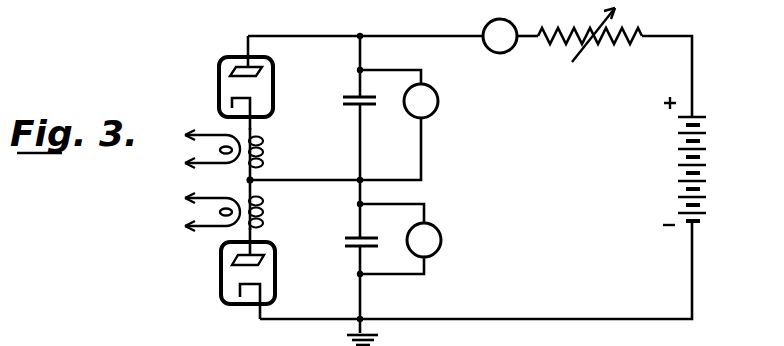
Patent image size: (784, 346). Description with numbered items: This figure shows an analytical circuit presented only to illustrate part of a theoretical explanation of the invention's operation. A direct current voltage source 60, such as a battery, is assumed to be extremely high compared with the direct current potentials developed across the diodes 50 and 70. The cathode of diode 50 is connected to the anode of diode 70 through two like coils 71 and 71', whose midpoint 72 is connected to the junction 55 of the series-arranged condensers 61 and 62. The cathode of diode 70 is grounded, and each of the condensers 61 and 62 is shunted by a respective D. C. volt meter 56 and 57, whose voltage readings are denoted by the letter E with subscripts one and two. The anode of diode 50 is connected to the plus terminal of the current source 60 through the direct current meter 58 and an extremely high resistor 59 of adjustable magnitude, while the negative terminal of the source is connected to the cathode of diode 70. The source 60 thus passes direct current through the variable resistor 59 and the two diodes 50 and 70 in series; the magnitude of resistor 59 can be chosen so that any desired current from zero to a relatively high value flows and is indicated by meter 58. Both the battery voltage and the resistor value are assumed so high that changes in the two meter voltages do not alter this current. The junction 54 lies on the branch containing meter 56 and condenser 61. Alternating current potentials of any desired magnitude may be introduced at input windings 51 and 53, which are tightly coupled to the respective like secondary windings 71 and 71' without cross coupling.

The diode 50 is at (219, 66).
The input winding 51 is at (232, 134).
The input winding 53 is at (214, 227).
The junction point 54 is at (362, 69).
The junction 55 is at (362, 178).
The D. C. volt meter 56 is at (438, 101).
The D. C. volt meter 57 is at (441, 238).
The direct current meter 58 is at (487, 24).
The variable resistor 59 is at (592, 46).
The direct current voltage source 60 is at (678, 168).
The condenser 61 is at (343, 99).
The condenser 62 is at (352, 238).
The diode 70 is at (275, 272).
The coil 71 is at (277, 154).
The coil 71' is at (280, 205).
The midpoint 72 is at (254, 178).